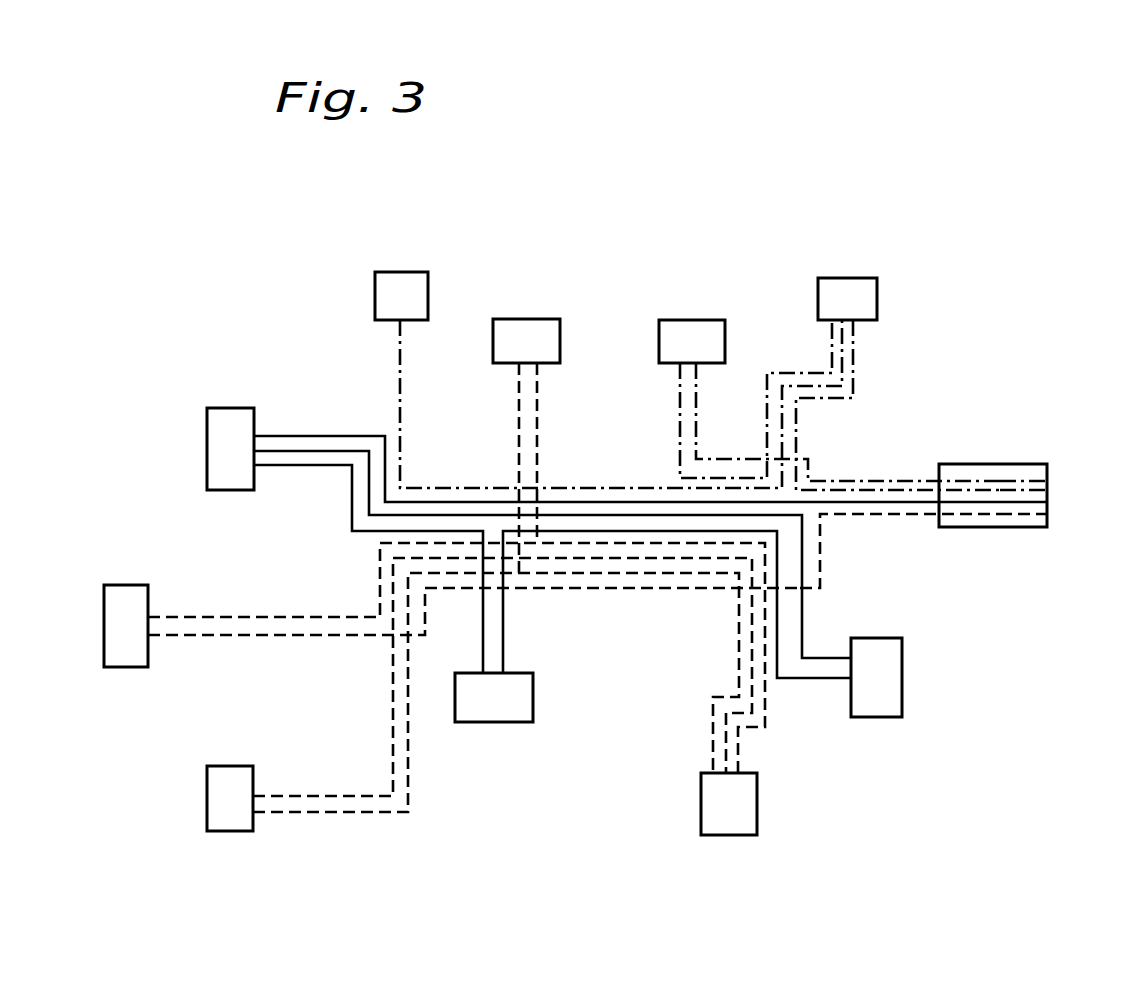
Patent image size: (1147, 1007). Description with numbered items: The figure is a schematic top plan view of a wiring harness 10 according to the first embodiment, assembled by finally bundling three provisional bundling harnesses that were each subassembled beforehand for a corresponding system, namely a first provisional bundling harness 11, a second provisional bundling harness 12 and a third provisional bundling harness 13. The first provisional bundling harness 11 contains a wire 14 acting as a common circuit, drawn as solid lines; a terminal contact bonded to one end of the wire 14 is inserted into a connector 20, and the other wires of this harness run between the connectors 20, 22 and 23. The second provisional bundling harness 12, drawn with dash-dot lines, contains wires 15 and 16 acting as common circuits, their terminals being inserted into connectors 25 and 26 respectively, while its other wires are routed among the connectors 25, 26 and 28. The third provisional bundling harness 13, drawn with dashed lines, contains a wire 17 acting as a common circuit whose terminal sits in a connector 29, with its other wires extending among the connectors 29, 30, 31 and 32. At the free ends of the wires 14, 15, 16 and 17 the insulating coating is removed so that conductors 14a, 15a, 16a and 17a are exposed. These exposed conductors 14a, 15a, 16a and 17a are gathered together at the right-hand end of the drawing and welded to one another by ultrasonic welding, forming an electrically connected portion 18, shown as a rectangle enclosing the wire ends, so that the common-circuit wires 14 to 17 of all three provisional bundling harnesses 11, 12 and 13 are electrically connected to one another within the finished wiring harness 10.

The wiring harness 10 is at (712, 290).
The first provisional bundling harness 11 is at (305, 432).
The second provisional bundling harness 12 is at (408, 424).
The third provisional bundling harness 13 is at (300, 646).
The wire 14 is at (849, 502).
The conductor 14a is at (1048, 503).
The wire 15 is at (925, 492).
The conductor 15a is at (997, 490).
The wire 16 is at (897, 481).
The conductor 16a is at (967, 486).
The wire 17 is at (870, 515).
The conductor 17a is at (986, 520).
The electrically connected portion 18 is at (1015, 528).
The connector 20 is at (207, 452).
The connector 22 is at (497, 723).
The connector 23 is at (870, 718).
The connector 25 is at (878, 300).
The connector 26 is at (725, 342).
The connector 28 is at (375, 296).
The connector 29 is at (125, 668).
The connector 30 is at (527, 318).
The connector 31 is at (207, 813).
The connector 32 is at (758, 800).